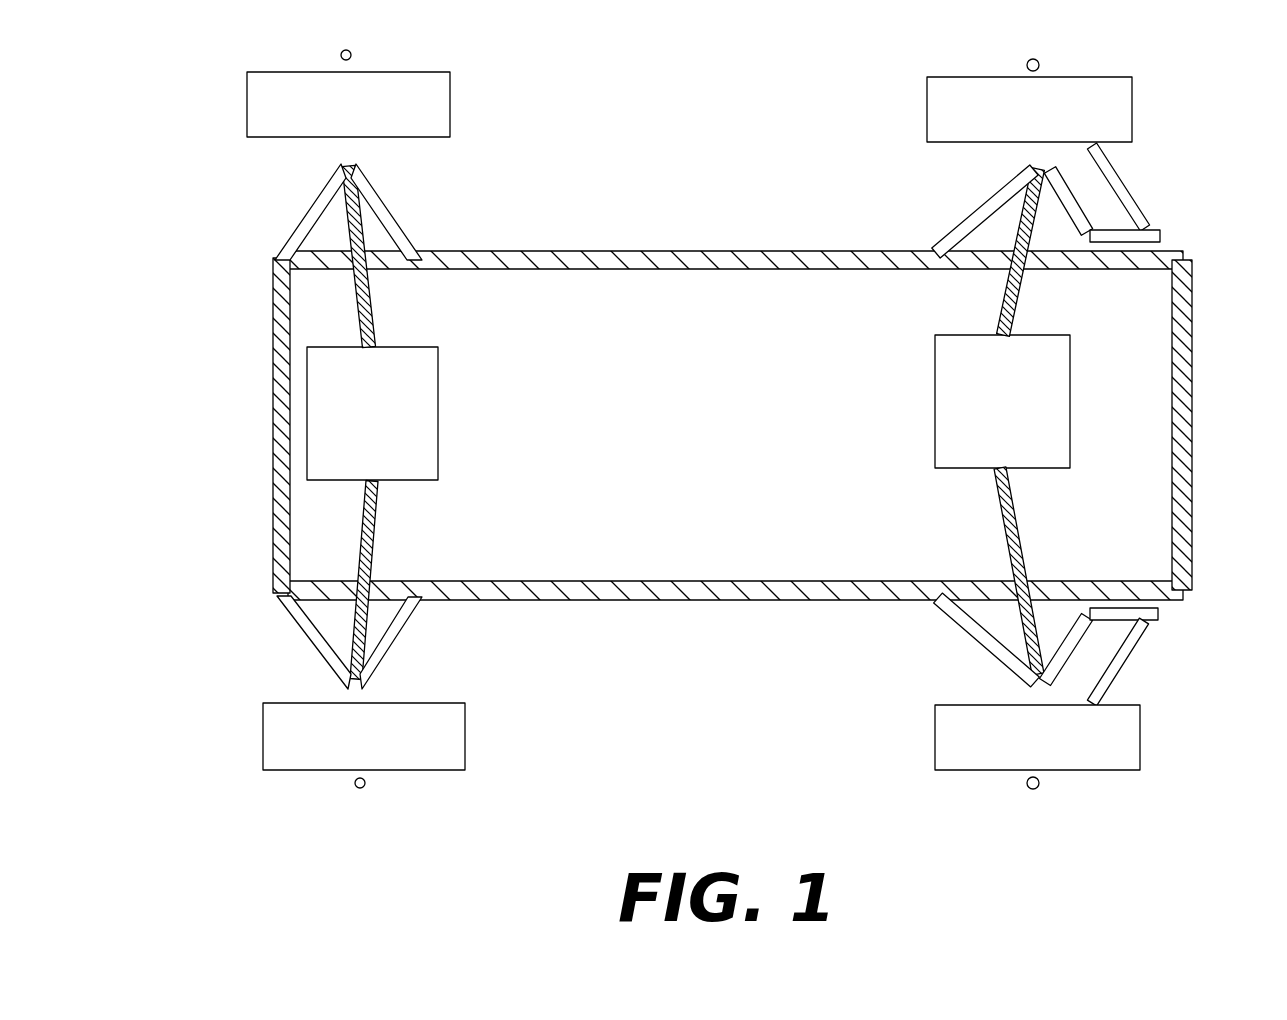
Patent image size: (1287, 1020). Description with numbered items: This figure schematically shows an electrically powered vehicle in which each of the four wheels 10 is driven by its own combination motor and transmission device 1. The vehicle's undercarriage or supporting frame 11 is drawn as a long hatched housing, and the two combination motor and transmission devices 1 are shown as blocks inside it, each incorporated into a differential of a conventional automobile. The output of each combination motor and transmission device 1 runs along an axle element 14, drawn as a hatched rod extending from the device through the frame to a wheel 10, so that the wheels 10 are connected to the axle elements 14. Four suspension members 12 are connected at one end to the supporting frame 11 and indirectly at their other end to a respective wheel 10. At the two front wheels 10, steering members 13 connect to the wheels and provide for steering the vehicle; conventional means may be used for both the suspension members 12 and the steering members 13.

The combination motor and transmission device 1 is at (380, 419).
The wheel 10 is at (450, 100).
The supporting frame 11 is at (1192, 488).
The suspension member 12 is at (388, 220).
The steering member 13 is at (1148, 210).
The axle element 14 is at (372, 312).